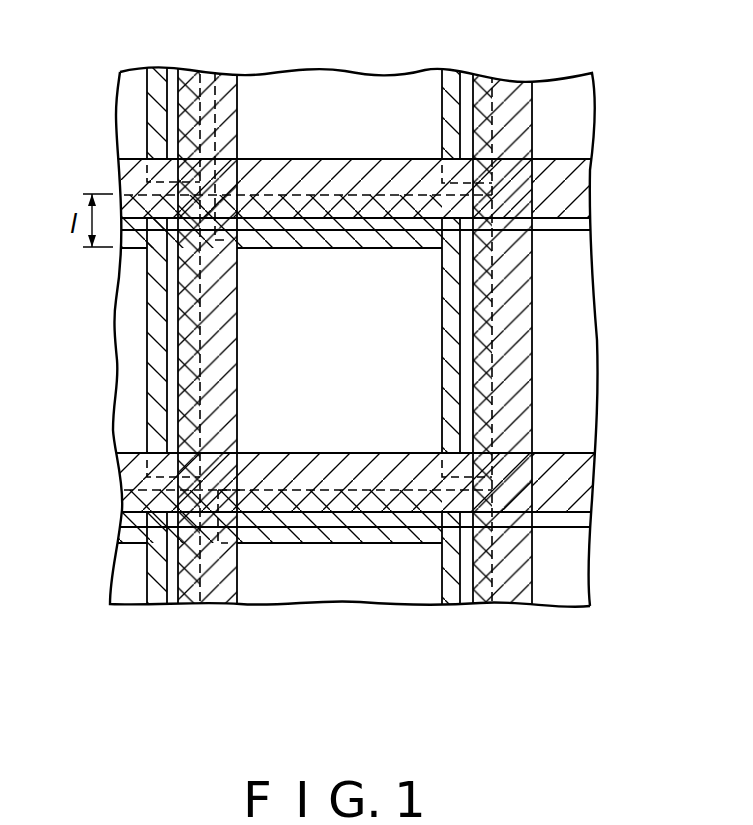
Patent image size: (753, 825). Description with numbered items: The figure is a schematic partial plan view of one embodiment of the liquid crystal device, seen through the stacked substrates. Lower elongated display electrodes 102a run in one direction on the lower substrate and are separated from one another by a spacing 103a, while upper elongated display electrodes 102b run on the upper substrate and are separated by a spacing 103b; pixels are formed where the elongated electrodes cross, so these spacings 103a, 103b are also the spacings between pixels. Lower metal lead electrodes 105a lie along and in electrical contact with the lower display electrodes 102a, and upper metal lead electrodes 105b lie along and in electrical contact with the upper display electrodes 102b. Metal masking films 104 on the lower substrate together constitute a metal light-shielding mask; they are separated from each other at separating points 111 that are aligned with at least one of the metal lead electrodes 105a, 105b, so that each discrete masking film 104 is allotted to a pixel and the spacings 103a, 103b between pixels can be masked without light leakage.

The separating point 111 is at (215, 72).
The spacing between lower display electrodes 103a is at (467, 82).
The spacing between upper display electrodes 103b is at (583, 229).
The metal masking film 104 is at (157, 333).
The lower metal lead electrode 105a is at (523, 122).
The upper metal lead electrode 105b is at (575, 190).
The lower elongated display electrode 102a is at (413, 577).
The upper elongated display electrode 102b is at (575, 347).